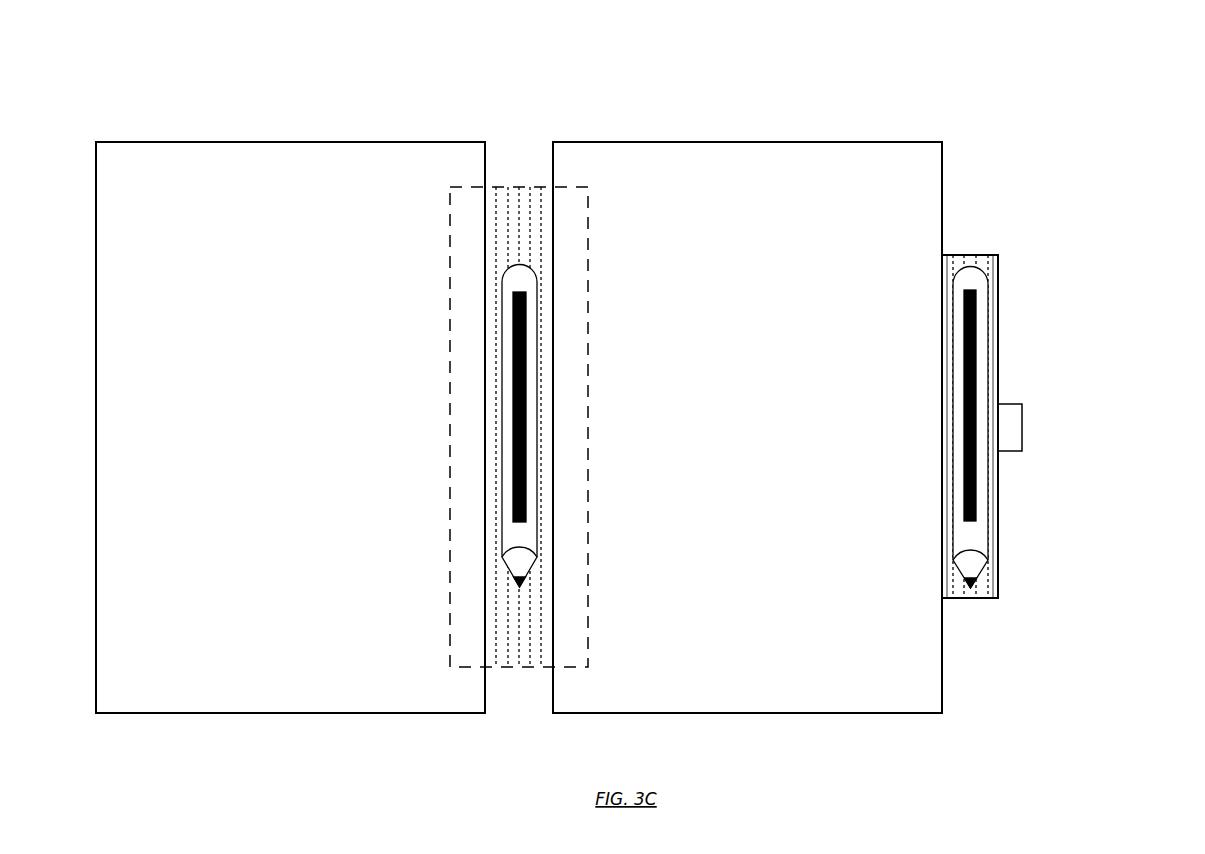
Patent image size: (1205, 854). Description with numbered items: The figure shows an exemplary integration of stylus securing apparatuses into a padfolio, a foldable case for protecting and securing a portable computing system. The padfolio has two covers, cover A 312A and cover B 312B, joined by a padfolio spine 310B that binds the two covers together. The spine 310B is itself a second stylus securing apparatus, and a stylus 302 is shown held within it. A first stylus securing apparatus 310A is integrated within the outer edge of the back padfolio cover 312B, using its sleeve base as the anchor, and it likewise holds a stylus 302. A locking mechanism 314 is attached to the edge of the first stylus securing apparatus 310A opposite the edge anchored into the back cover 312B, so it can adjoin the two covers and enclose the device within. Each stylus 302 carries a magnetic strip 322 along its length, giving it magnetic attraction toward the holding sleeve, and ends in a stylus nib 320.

The stylus 302 is at (950, 530).
The first stylus securing apparatus 310A is at (977, 602).
The padfolio spine 310B is at (519, 187).
The padfolio cover 312A is at (290, 427).
The back padfolio cover 312B is at (747, 427).
The locking mechanism 314 is at (1022, 412).
The stylus nib 320 is at (975, 582).
The magnetic strip 322 is at (527, 298).